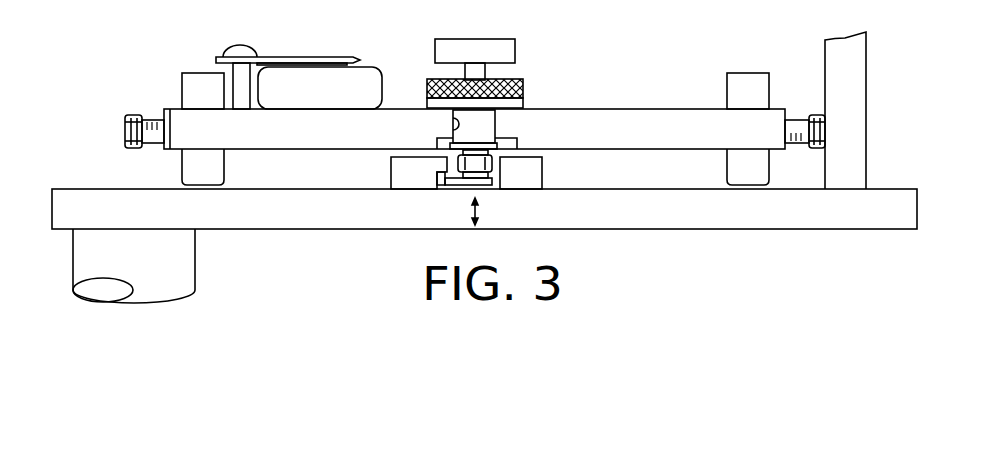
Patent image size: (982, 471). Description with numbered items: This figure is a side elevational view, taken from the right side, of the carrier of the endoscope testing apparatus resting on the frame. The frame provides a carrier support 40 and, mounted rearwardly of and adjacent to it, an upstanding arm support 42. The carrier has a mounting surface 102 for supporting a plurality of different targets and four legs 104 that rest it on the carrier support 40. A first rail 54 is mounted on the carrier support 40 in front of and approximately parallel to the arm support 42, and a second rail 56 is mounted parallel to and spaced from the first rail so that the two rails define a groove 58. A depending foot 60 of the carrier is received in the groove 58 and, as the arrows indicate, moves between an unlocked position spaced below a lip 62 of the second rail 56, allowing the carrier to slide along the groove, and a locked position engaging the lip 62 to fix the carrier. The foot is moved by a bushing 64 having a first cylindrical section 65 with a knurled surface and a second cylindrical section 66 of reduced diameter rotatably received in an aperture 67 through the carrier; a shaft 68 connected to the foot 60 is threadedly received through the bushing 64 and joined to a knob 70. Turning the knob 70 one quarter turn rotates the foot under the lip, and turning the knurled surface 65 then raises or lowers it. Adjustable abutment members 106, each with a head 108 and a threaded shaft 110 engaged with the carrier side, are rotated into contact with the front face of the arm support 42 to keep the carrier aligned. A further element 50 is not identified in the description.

The carrier support 40 is at (88, 188).
The arm support 42 is at (825, 55).
The chuck 50 is at (517, 464).
The first rail 54 is at (538, 167).
The second rail 56 is at (402, 175).
The groove 58 is at (497, 182).
The foot 60 is at (463, 182).
The lip 62 is at (445, 185).
The bushing 64 is at (497, 118).
The first cylindrical section 65 is at (523, 88).
The second cylindrical section 66 is at (497, 130).
The aperture 67 is at (452, 118).
The shaft 68 is at (487, 72).
The knob 70 is at (485, 39).
The mounting surface 102 is at (693, 108).
The legs 104 is at (205, 72).
The adjustable abutment members 106 is at (125, 128).
The head 108 is at (135, 115).
The threaded shaft 110 is at (148, 144).